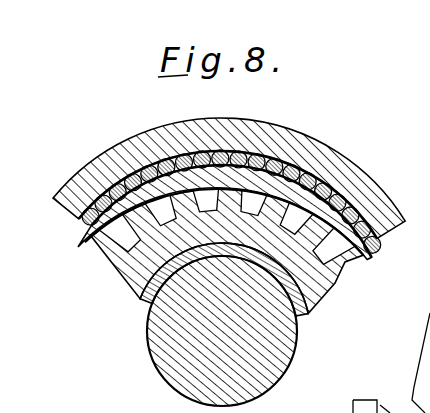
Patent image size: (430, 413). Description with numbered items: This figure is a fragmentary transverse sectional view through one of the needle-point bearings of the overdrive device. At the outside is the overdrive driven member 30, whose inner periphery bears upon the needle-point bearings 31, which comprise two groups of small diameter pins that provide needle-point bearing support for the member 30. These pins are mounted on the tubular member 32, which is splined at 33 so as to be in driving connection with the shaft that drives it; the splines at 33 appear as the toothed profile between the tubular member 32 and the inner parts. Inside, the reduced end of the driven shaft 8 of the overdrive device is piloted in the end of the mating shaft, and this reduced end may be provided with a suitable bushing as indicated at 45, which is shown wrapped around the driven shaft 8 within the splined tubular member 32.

The driven shaft 8 is at (158, 350).
The overdrive driven member 30 is at (378, 197).
The needle-point bearings 31 is at (313, 188).
The tubular member 32 is at (81, 249).
The splines 33 is at (112, 253).
The bushing 45 is at (143, 308).